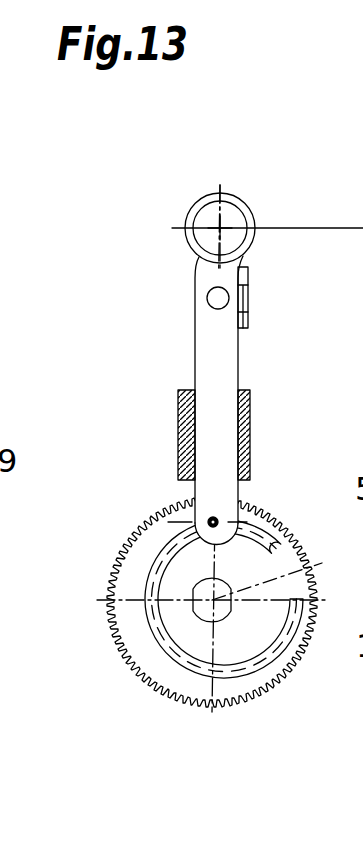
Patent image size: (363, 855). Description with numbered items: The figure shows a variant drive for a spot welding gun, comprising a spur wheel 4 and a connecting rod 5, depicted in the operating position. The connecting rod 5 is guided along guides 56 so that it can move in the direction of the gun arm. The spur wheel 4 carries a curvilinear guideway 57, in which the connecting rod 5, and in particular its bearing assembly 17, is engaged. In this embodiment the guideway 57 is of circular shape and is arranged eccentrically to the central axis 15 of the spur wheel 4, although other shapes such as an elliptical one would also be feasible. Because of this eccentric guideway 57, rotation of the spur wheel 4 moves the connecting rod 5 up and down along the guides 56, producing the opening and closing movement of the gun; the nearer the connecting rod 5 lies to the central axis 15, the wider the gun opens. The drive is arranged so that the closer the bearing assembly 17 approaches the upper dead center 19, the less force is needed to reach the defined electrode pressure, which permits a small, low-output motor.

The spur wheel 4 is at (145, 650).
The connecting rod 5 is at (205, 382).
The central axis 15 is at (242, 592).
The bearing assembly 17 is at (216, 519).
The upper dead center 19 is at (293, 572).
The guides 56 is at (192, 438).
The curvilinear guideway 57 is at (150, 560).